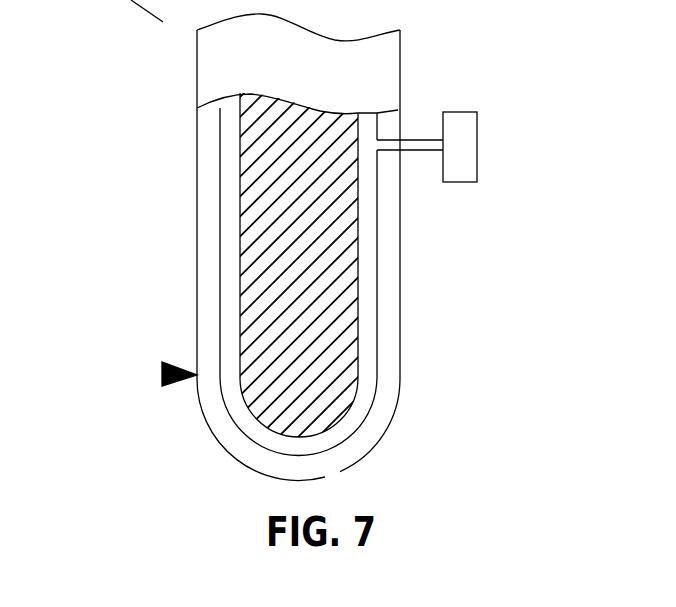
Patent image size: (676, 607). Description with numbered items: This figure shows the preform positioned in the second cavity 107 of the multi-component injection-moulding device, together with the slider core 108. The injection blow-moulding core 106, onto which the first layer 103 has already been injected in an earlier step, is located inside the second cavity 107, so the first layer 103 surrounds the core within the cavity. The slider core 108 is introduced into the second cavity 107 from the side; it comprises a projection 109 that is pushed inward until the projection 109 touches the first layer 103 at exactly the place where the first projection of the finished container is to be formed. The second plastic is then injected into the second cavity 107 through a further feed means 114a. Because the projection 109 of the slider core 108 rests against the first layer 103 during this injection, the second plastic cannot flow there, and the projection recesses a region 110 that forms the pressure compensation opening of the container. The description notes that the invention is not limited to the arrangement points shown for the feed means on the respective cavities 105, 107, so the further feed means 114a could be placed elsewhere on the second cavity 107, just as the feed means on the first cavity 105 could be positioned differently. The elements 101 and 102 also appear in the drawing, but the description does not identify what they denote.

The outer tube 101 is at (223, 78).
The inner tube 102 is at (215, 173).
The second cavity 107 is at (205, 208).
The first layer 103 is at (232, 247).
The first cavity 105 is at (227, 275).
The injection blow-moulding core 106 is at (247, 312).
The slider core 108 is at (477, 150).
The projection 109 is at (421, 139).
The region 110 is at (378, 150).
The further feed means 114a is at (162, 374).